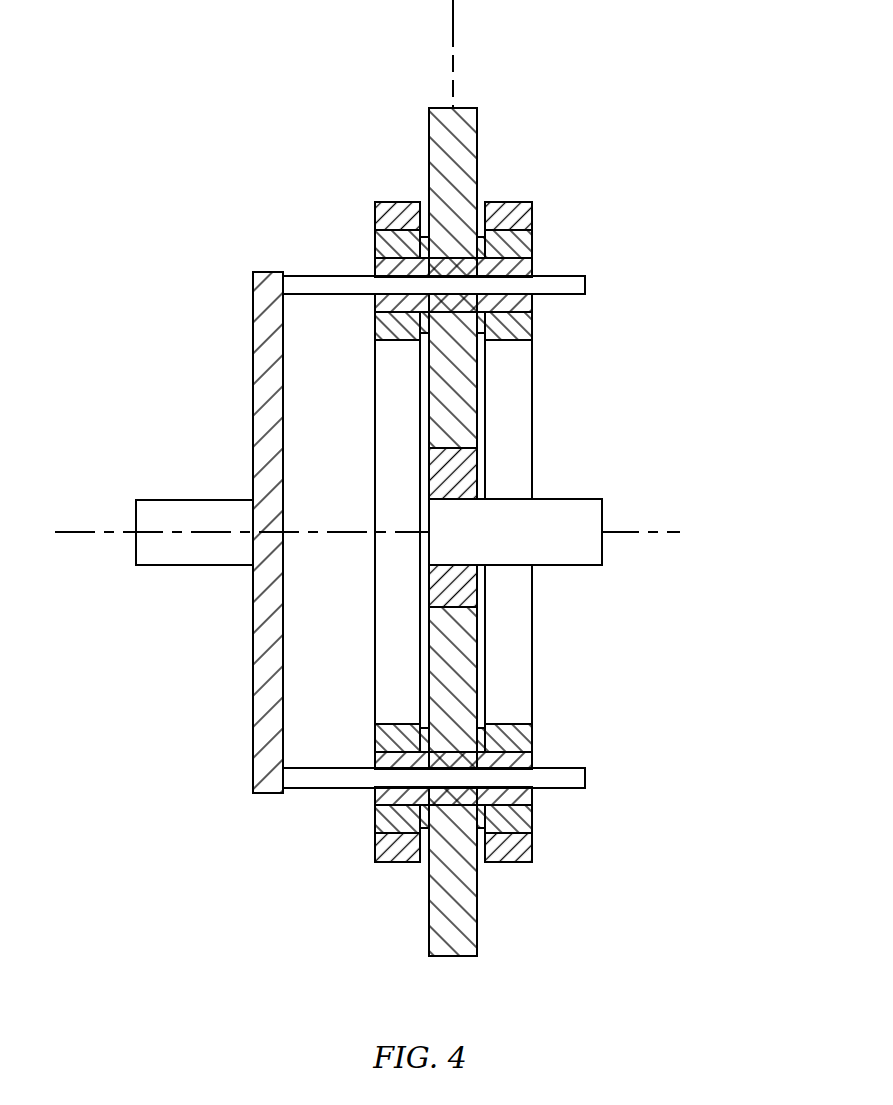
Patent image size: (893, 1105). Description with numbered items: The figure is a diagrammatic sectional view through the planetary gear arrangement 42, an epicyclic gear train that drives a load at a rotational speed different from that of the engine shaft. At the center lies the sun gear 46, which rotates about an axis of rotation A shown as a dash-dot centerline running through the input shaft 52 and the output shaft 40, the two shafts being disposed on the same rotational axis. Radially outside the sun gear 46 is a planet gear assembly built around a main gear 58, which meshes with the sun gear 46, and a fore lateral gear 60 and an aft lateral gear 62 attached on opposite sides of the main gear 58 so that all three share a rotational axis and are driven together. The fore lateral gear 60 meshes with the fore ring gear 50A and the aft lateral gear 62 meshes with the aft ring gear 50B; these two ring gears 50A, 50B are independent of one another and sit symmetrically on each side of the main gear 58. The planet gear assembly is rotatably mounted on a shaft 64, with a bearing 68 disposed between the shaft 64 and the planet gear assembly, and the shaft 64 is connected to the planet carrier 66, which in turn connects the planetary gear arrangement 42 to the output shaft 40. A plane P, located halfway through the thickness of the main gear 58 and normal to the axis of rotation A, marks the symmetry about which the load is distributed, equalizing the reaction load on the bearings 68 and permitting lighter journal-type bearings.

The output shaft 40 is at (160, 565).
The planetary gear arrangement 42 is at (397, 480).
The sun gear 46 is at (462, 593).
The fore ring gear 50A is at (375, 212).
The aft ring gear 50B is at (533, 210).
The input shaft 52 is at (602, 550).
The main gear 58 is at (466, 128).
The fore lateral gear 60 is at (375, 244).
The aft lateral gear 62 is at (533, 240).
The shaft 64 is at (585, 283).
The planet carrier 66 is at (270, 282).
The bearing 68 is at (533, 270).
The plane P is at (453, 30).
The axis of rotation A is at (87, 522).